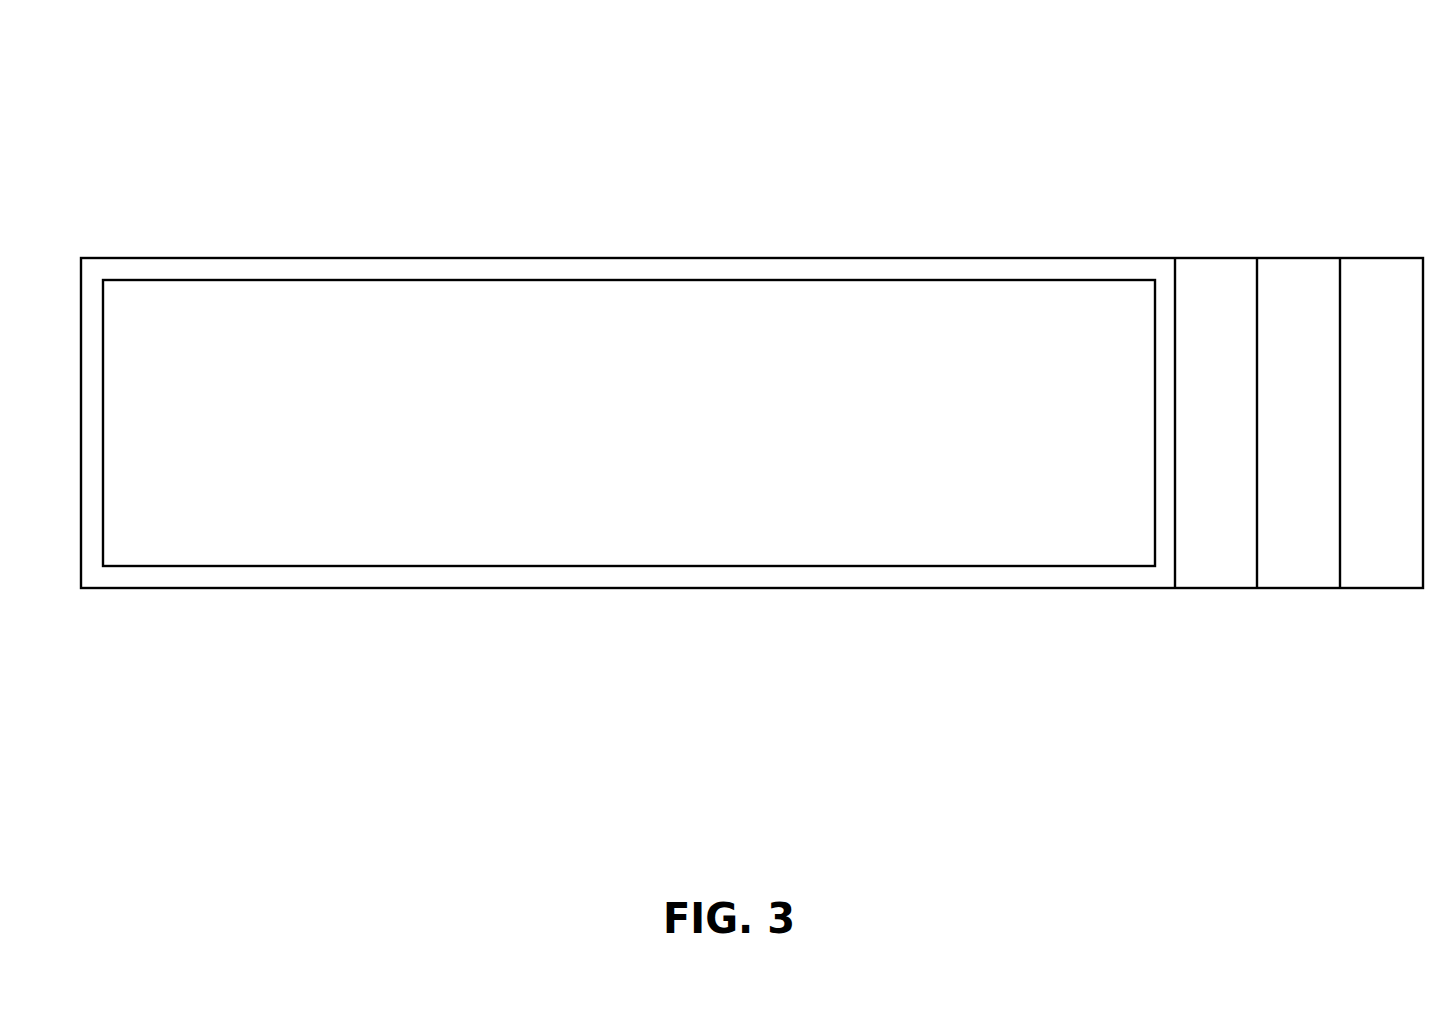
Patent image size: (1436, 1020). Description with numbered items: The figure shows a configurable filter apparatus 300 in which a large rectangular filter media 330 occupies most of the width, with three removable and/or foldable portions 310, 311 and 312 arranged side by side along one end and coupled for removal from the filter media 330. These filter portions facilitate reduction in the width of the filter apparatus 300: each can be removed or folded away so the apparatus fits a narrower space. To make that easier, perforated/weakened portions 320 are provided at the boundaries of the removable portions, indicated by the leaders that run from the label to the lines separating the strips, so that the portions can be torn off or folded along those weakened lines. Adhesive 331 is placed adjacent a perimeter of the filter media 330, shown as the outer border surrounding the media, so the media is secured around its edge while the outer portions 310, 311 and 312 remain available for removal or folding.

The filter apparatus 300 is at (1281, 36).
The adhesive 331 is at (749, 265).
The filter media 330 is at (583, 440).
The perforated/weakened portions 320 is at (1338, 258).
The removable and/or foldable portion 312 is at (1188, 590).
The removable and/or foldable portion 311 is at (1310, 590).
The removable and/or foldable portion 310 is at (1393, 590).